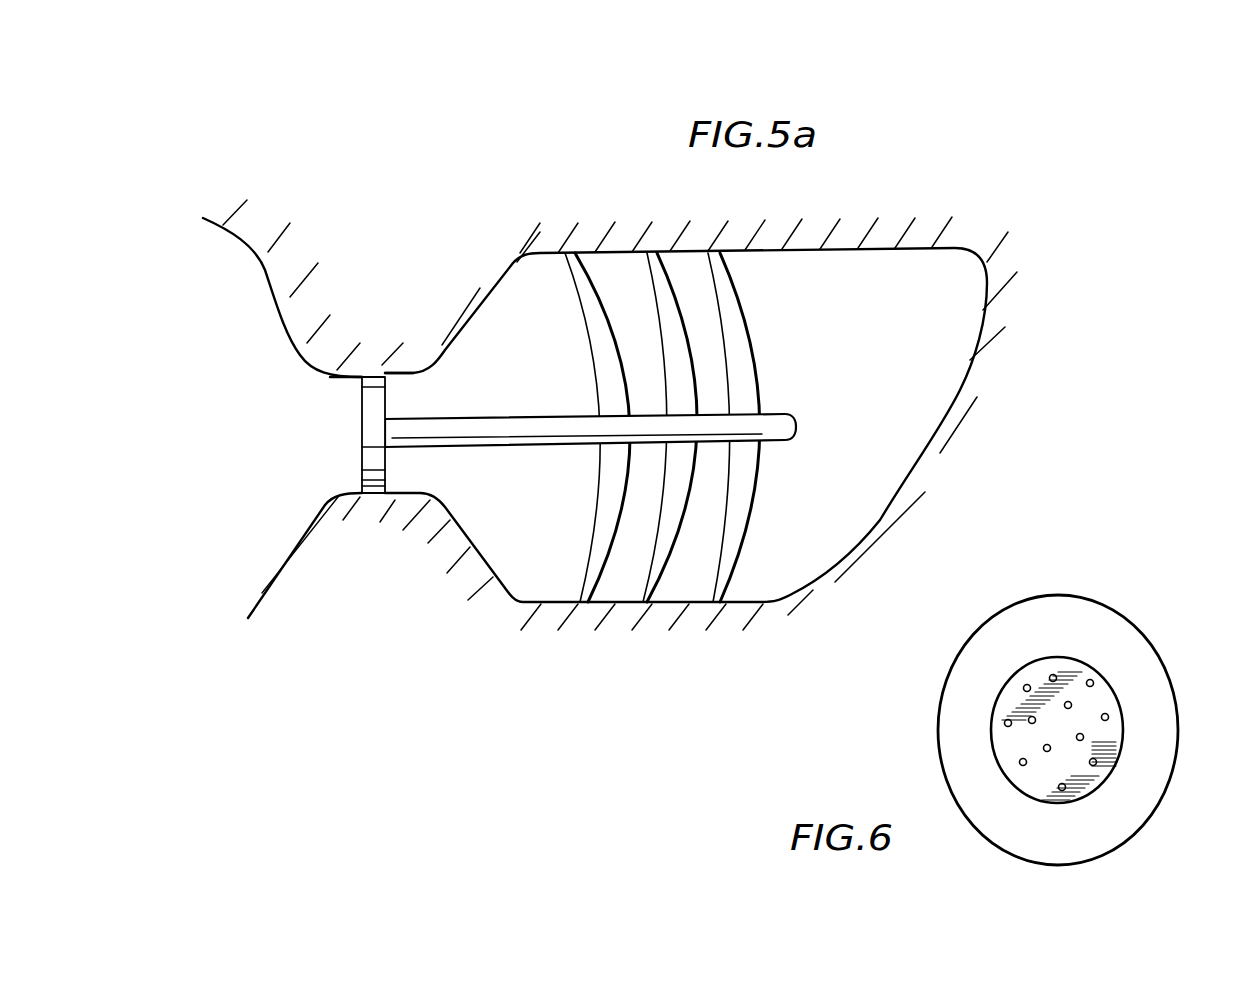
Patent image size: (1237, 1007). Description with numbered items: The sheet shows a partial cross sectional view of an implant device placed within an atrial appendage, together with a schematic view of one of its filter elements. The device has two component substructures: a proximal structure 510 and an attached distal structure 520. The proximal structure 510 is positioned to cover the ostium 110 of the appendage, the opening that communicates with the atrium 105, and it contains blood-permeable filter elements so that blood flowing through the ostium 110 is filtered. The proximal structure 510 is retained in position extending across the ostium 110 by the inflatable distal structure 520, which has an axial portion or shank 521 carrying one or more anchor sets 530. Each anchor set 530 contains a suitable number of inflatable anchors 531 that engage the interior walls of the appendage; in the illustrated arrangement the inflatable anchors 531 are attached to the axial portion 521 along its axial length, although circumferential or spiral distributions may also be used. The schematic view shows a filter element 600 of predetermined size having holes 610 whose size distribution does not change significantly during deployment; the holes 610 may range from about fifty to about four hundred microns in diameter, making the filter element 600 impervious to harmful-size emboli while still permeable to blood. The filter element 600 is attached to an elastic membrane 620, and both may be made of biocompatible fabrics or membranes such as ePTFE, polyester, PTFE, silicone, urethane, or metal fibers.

In FIG. 5A, the atrium 105 is at (258, 358).
In FIG. 5A, the ostium 110 is at (369, 377).
In FIG. 5A, the proximal structure 510 is at (362, 462).
In FIG. 5A, the distal structure 520 is at (633, 464).
In FIG. 5A, the axial portion 521 is at (795, 428).
In FIG. 5A, the anchor set 530 is at (770, 312).
In FIG. 5A, the inflatable anchor 531 is at (750, 342).
In FIG. 6, the filter element 600 is at (992, 722).
In FIG. 6, the holes 610 is at (1107, 714).
In FIG. 6, the elastic membrane 620 is at (1148, 790).